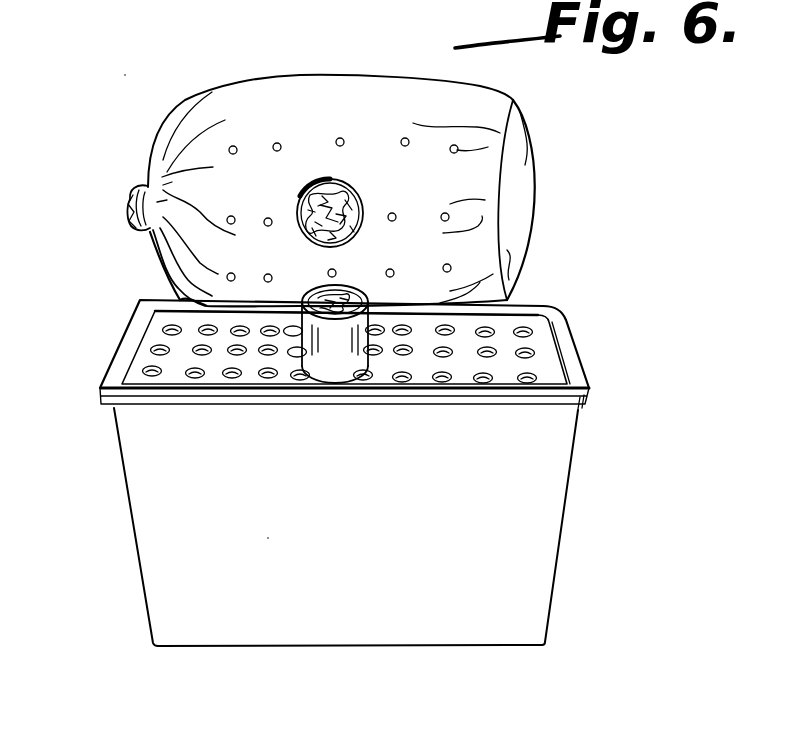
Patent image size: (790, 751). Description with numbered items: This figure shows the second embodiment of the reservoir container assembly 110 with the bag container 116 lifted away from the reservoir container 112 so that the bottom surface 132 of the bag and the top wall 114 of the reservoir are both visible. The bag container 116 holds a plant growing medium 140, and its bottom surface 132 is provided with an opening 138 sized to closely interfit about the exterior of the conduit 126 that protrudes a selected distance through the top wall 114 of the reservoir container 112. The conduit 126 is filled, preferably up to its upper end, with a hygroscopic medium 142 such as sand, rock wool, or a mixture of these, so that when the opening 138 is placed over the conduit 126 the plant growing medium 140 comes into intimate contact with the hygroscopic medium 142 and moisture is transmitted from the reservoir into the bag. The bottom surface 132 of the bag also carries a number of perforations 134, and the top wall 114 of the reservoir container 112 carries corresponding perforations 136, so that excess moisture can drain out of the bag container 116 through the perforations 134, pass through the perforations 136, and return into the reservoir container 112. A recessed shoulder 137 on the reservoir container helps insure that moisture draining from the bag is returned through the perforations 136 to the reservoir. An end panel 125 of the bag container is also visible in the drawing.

The reservoir container assembly 110 is at (62, 155).
The reservoir container 112 is at (547, 505).
The top wall 114 is at (503, 357).
The bag container 116 is at (510, 110).
The end panel 125 is at (528, 191).
The conduit 126 is at (369, 296).
The bottom surface 132 is at (340, 183).
The perforations 134 is at (339, 141).
The perforations 136 is at (297, 378).
The recessed shoulder 137 is at (547, 308).
The opening 138 is at (355, 235).
The plant growing medium 140 is at (358, 206).
The hygroscopic medium 142 is at (312, 288).